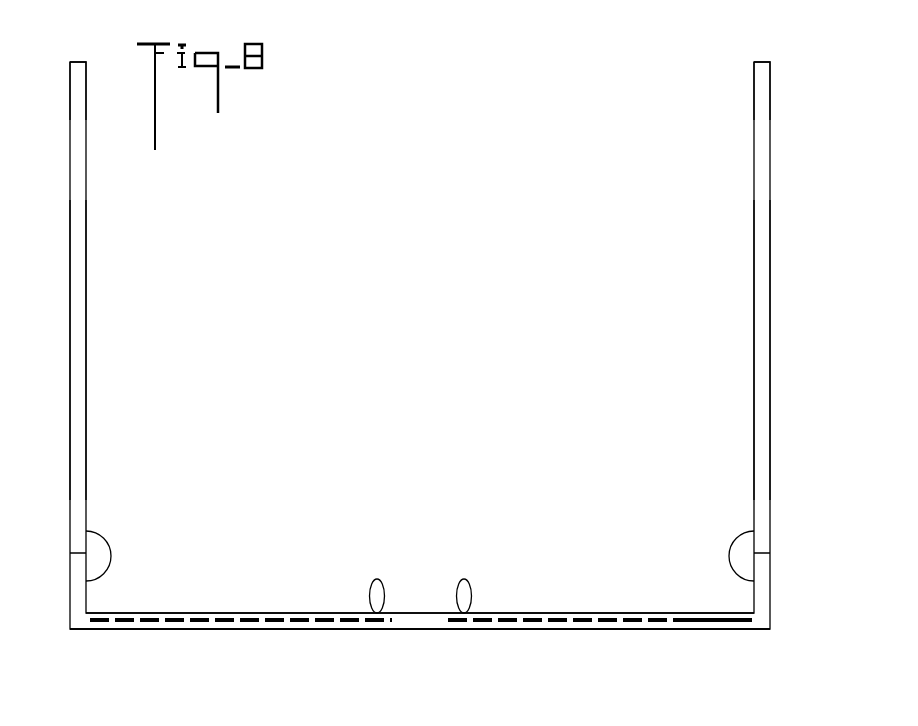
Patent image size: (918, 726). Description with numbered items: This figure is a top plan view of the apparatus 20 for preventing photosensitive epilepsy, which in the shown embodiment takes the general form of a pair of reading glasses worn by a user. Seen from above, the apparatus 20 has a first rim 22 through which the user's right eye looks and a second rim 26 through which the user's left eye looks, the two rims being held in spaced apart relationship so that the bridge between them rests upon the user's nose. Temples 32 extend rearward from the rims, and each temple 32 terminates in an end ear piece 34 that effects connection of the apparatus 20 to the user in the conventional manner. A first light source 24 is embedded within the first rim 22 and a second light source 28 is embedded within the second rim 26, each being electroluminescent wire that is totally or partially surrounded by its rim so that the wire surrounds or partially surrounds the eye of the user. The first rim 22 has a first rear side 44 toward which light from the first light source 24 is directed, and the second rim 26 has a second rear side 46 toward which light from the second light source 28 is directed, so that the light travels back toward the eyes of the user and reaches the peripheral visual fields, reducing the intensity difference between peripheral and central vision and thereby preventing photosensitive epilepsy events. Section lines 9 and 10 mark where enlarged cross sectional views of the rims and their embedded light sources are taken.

The apparatus for preventing photosensitive epilepsy 20 is at (690, 77).
The first rim 22 is at (167, 629).
The first light source 24 is at (307, 613).
The second rim 26 is at (655, 629).
The second light source 28 is at (500, 620).
The temples 32 is at (70, 396).
The end ear pieces 34 is at (70, 123).
The first rear side 44 is at (167, 613).
The second rear side 46 is at (683, 613).
The section line 9- 9 is at (222, 682).
The section line 10- 10 is at (565, 682).